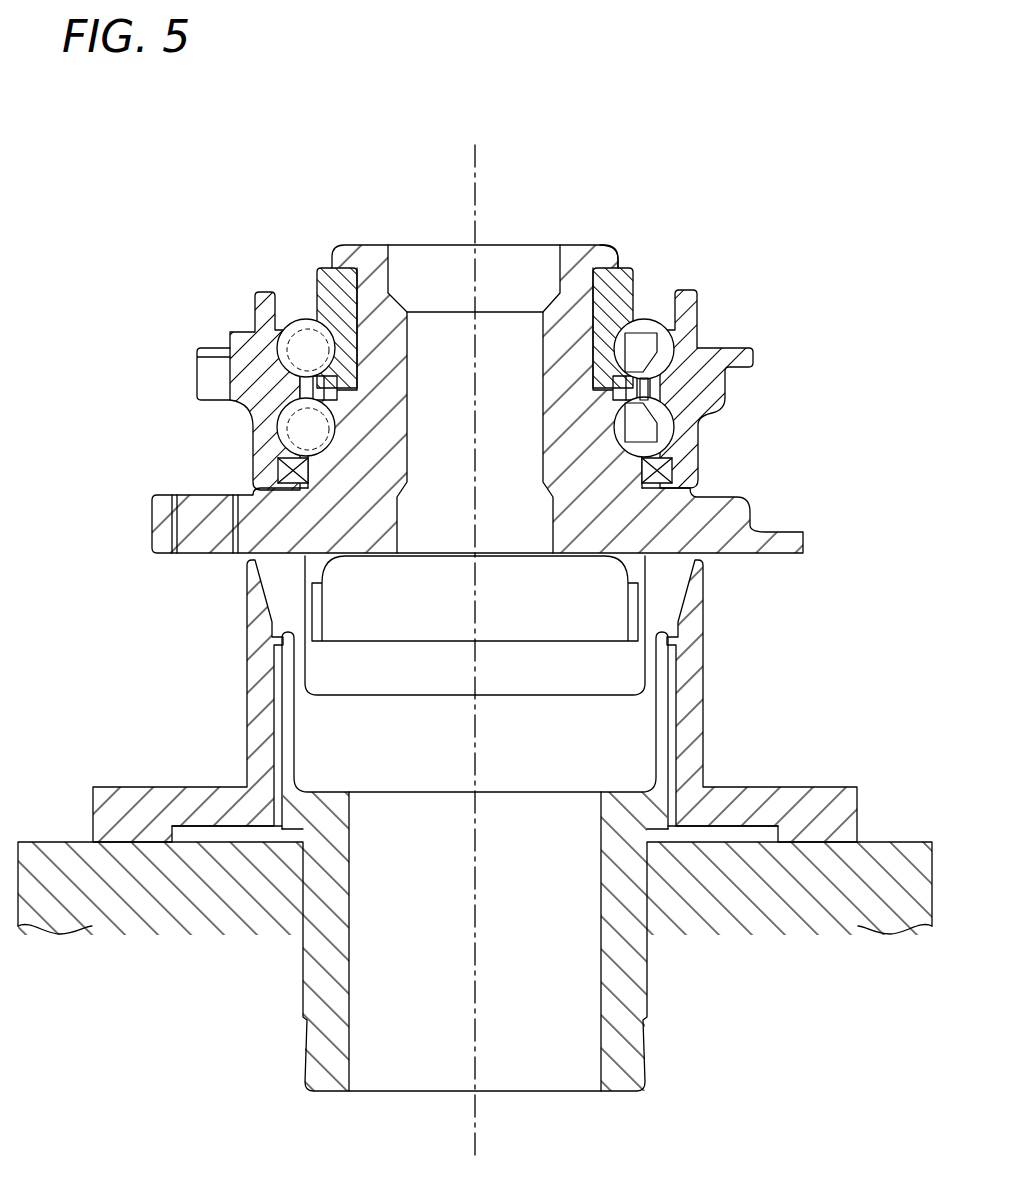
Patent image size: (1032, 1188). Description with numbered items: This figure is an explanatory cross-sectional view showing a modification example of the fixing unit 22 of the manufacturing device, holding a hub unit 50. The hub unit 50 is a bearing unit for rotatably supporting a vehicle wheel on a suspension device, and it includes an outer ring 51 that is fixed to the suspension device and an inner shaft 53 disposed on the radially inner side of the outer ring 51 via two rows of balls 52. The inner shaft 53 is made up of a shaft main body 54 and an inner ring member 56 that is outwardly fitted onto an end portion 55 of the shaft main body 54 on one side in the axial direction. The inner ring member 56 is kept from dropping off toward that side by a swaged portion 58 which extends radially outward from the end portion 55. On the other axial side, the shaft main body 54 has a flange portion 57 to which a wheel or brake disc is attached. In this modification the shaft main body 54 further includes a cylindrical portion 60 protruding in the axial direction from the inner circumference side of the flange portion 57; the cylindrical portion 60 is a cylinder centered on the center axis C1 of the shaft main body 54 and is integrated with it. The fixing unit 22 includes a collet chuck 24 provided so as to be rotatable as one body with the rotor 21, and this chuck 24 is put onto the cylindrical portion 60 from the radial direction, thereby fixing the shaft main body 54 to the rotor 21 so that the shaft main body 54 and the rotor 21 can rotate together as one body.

The center axis C1 is at (478, 180).
The rotor 21 is at (866, 842).
The fixing unit 22 is at (243, 714).
The chuck 24 is at (708, 598).
The hub unit 50 is at (444, 358).
The outer ring 51 is at (238, 377).
The balls 52 is at (290, 340).
The inner shaft 53 is at (379, 558).
The shaft main body 54 is at (570, 436).
The end portion 55 is at (477, 373).
The inner ring member 56 is at (622, 292).
The flange portion 57 is at (150, 519).
The swaged portion 58 is at (612, 258).
The cylindrical portion 60 is at (628, 612).